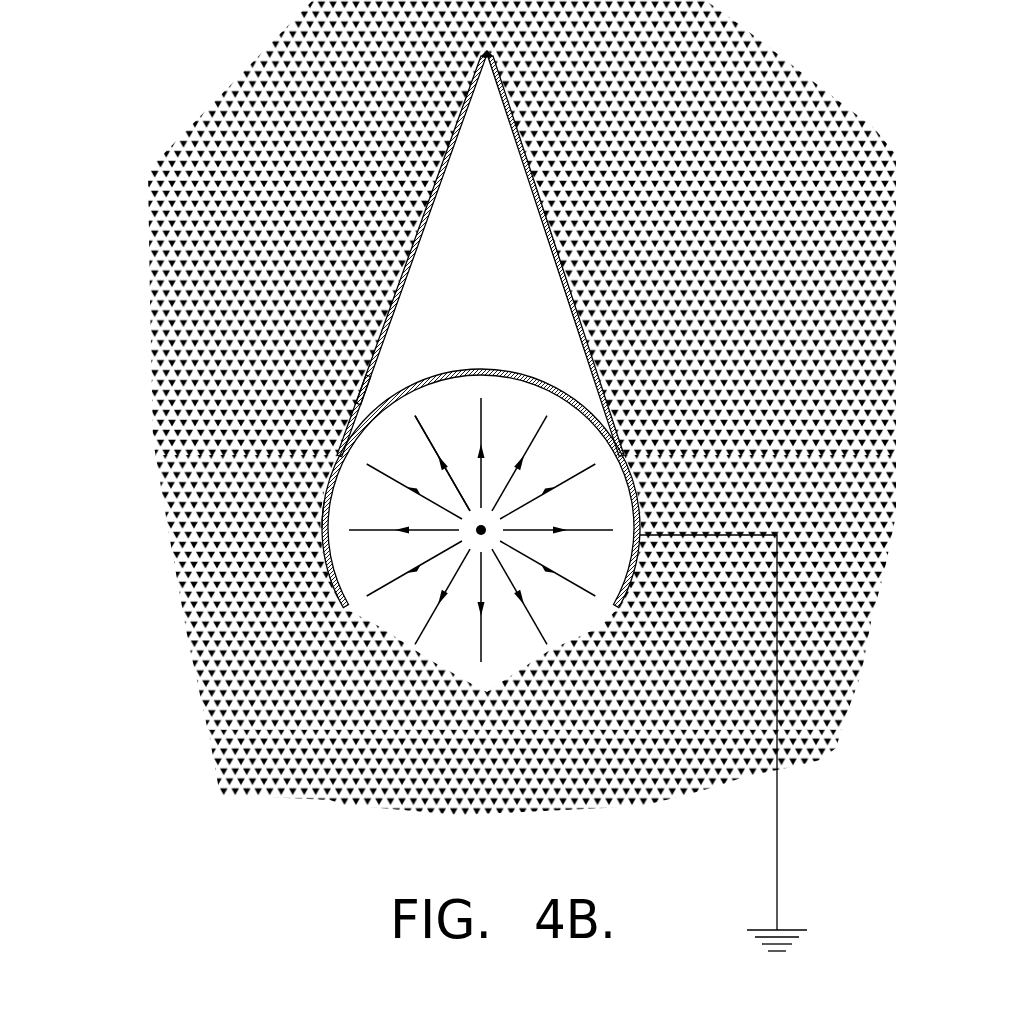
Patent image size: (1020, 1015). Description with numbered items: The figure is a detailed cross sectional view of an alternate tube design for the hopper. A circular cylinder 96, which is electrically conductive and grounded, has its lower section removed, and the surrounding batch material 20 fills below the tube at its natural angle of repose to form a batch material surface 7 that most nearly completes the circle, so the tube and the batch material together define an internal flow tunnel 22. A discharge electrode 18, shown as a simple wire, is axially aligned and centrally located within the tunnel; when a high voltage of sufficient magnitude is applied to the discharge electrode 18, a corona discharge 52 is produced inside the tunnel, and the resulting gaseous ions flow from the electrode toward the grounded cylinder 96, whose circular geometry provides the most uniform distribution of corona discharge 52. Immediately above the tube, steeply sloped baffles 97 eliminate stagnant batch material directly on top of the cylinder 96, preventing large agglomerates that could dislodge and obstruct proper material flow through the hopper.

The batch material surface 7 is at (393, 647).
The discharge electrode 18 is at (333, 562).
The batch material 20 is at (352, 401).
The internal flow tunnel 22 is at (410, 457).
The corona discharge 52 is at (415, 493).
The circular cylinder 96 is at (325, 497).
The steeply sloped baffles 97 is at (517, 145).